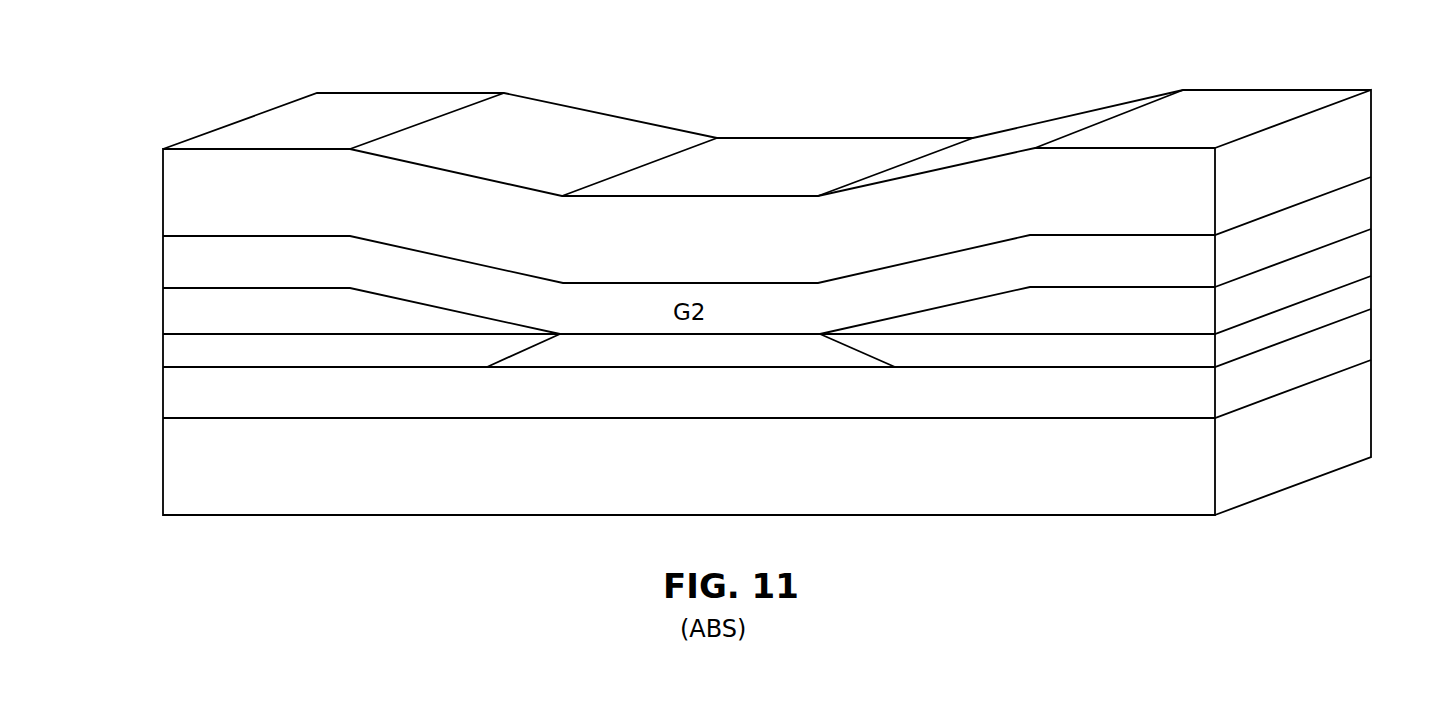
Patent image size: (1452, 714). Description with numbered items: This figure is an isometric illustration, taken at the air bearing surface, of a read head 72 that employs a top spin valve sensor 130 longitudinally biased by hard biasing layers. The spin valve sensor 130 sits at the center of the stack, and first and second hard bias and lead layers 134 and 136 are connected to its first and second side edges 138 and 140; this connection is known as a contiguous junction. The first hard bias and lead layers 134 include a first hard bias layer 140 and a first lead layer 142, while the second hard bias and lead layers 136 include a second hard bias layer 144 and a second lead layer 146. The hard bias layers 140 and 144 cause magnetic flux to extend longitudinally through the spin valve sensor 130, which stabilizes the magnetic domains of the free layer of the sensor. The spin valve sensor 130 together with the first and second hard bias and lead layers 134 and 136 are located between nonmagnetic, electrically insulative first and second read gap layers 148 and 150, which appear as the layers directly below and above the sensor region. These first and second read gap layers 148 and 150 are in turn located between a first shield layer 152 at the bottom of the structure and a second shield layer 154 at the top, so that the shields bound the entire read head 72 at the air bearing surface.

The read head 72 is at (865, 93).
The top spin valve sensor 130 is at (598, 334).
The first hard bias and lead layers 134 is at (160, 288).
The second hard bias and lead layers 136 is at (1380, 227).
The first side edge 138 is at (510, 357).
The first hard bias layer 140 is at (208, 352).
The first lead layer 142 is at (208, 302).
The second hard bias layer 144 is at (1163, 350).
The second lead layer 146 is at (1163, 300).
The first read gap layer 148 is at (468, 410).
The second read gap layer 150 is at (418, 268).
The first shield layer 152 is at (343, 495).
The second shield layer 154 is at (618, 127).